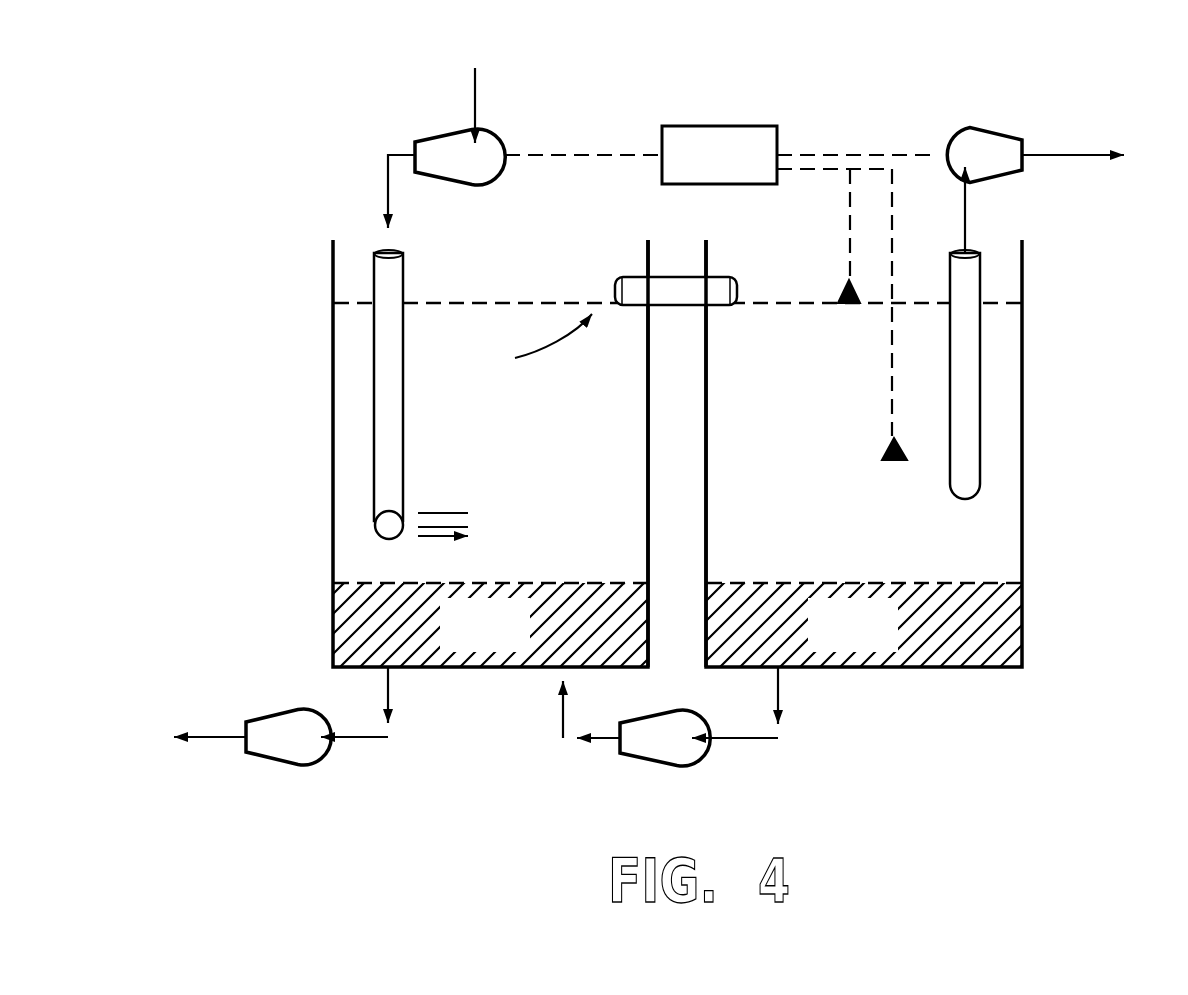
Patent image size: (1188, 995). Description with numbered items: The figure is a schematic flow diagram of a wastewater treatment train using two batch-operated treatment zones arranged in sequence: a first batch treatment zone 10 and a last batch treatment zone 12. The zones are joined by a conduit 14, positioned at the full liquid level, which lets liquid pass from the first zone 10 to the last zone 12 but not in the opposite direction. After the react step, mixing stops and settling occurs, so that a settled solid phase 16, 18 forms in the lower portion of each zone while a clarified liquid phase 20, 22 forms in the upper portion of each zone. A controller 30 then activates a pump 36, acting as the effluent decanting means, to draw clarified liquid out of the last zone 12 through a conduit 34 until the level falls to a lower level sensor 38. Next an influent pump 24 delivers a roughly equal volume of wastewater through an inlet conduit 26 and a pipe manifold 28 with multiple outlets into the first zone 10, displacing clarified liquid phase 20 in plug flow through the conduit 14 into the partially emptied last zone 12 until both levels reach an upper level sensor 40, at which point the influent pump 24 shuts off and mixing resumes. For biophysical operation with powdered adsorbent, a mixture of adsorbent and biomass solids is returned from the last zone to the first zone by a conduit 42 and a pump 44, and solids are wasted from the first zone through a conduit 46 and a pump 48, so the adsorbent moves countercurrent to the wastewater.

The first batch treatment zone 10 is at (333, 418).
The last batch treatment zone 12 is at (1023, 465).
The conduit 14 is at (673, 275).
The settled solid phase 16 is at (485, 622).
The settled solid phase 18 is at (865, 622).
The clarified liquid phase 20 is at (490, 368).
The clarified liquid phase 22 is at (864, 360).
The influent pump 24 is at (455, 130).
The inlet conduit 26 is at (373, 293).
The pipe manifold 28 is at (375, 535).
The controller 30 is at (732, 137).
The conduit 34 is at (1000, 380).
The pump 36 is at (965, 127).
The lower level sensor 38 is at (880, 455).
The upper level sensor 40 is at (840, 297).
The conduit 42 is at (563, 715).
The pump 44 is at (652, 763).
The conduit 46 is at (374, 738).
The pump 48 is at (275, 767).